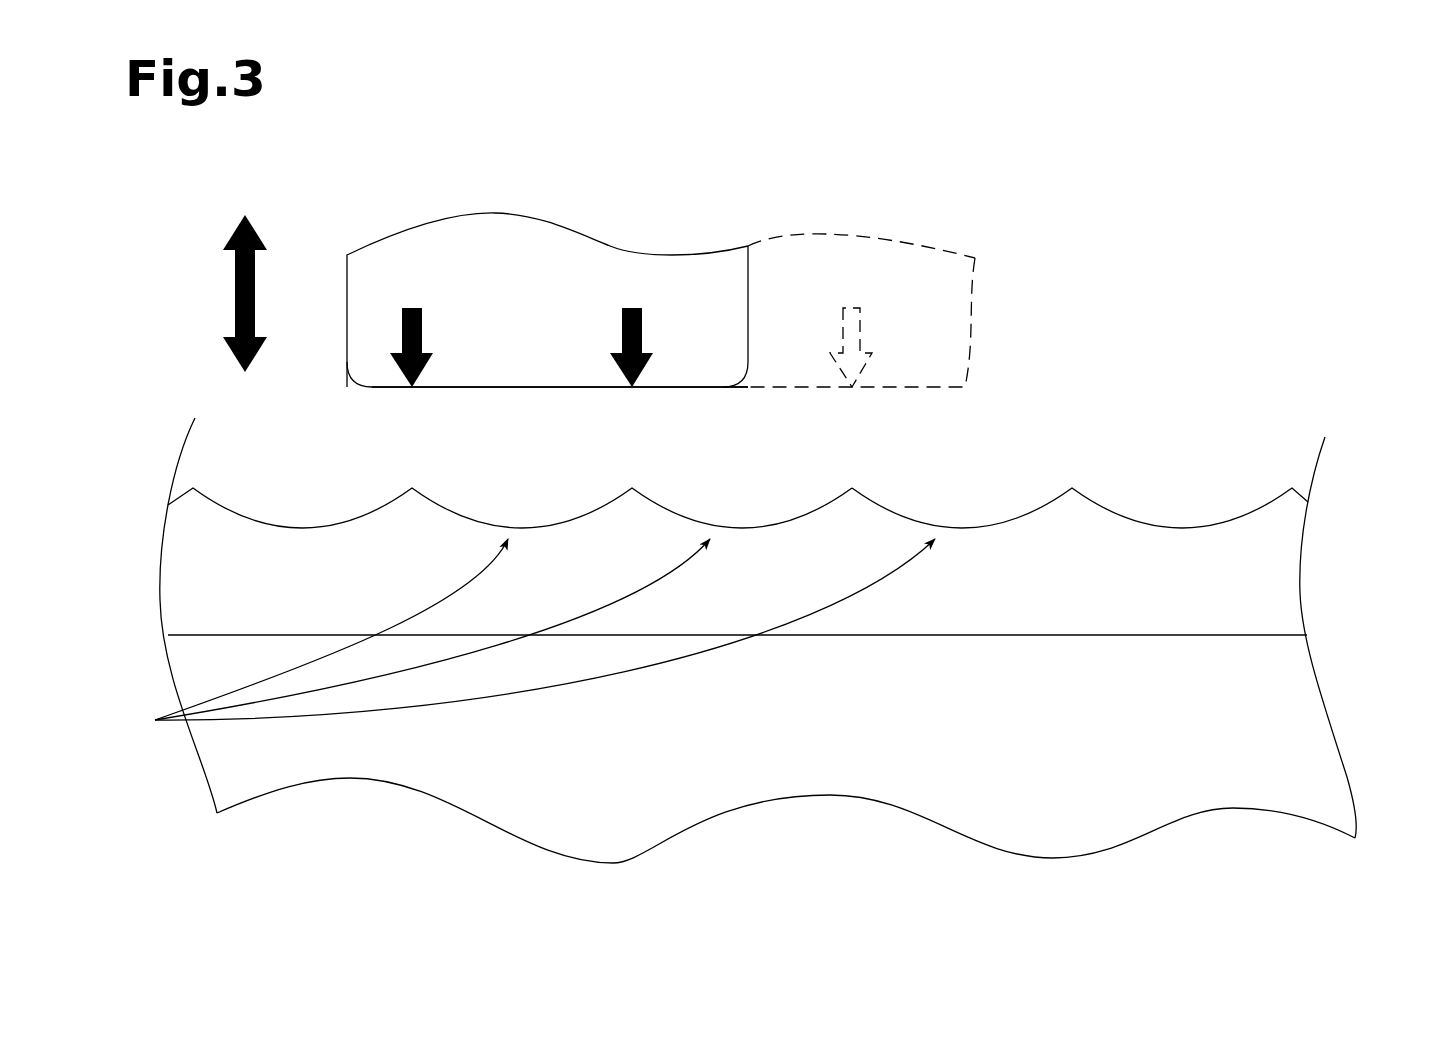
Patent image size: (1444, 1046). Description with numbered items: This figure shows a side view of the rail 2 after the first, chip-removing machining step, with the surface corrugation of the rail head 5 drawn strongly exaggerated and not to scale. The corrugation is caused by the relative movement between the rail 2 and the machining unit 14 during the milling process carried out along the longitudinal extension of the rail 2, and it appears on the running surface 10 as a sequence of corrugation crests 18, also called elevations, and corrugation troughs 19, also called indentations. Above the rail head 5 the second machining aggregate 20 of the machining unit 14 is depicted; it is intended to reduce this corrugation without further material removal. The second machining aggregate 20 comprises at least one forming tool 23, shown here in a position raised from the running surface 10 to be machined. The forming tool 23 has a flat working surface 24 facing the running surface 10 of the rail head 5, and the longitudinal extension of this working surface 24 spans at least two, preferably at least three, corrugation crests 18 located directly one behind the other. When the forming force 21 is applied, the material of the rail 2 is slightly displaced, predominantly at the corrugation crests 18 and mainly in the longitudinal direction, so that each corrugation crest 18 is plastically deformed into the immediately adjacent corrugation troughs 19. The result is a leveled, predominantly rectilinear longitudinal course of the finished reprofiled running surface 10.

The rail 2 is at (1299, 345).
The rail head 5 is at (1344, 547).
The running surface 10 is at (1168, 527).
The machining unit 14 is at (937, 196).
The corrugation crests 18 is at (427, 482).
The corrugation troughs 19 is at (520, 639).
The second machining aggregate 20 is at (842, 182).
The forming force 21 is at (843, 307).
The forming tool 23 is at (731, 299).
The working surface 24 is at (478, 391).